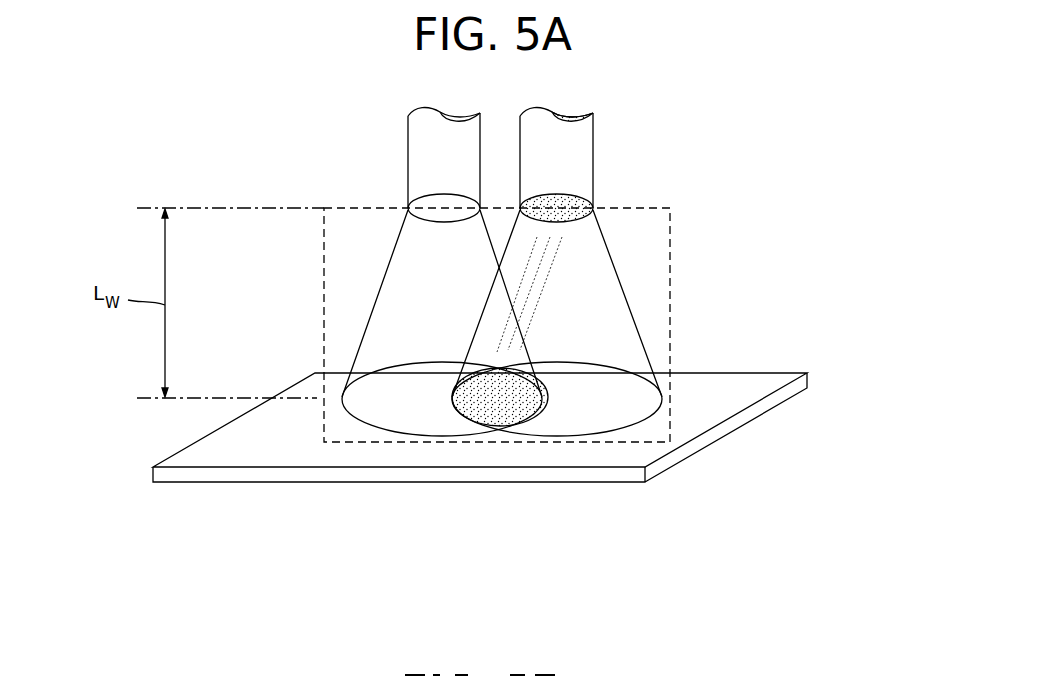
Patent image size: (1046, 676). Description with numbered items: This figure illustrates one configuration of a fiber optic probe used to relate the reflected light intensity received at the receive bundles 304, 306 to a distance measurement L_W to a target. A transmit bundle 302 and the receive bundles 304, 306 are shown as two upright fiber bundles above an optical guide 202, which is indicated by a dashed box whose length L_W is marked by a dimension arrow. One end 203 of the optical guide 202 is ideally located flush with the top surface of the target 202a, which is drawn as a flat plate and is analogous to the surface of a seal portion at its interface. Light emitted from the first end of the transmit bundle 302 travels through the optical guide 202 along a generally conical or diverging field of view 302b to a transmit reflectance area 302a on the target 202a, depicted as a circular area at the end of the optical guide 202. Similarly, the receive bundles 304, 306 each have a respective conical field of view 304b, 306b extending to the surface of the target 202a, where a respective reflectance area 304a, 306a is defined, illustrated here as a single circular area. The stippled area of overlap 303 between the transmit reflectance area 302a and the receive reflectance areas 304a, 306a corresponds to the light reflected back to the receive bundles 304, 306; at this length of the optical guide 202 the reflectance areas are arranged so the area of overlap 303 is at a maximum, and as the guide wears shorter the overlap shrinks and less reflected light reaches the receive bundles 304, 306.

The optical guide 202 is at (671, 305).
The top surface of the target 202a is at (312, 454).
The end of the optical guide 203 is at (623, 443).
The transmit bundle 302 is at (408, 153).
The transmit reflectance area 302a is at (385, 390).
The field of view of the transmit bundle 302b is at (383, 275).
The area of overlap 303 is at (522, 408).
The receive bundle 304 is at (625, 164).
The receive bundle 306 is at (593, 143).
The receive reflectance area 304a is at (664, 412).
The receive reflectance area 306a is at (620, 410).
The field of view of receive bundle 304b is at (636, 303).
The field of view of receive bundle 306b is at (612, 262).